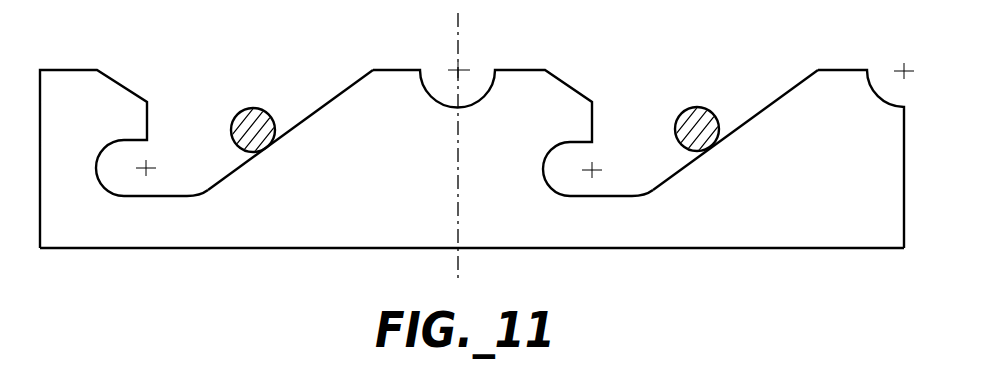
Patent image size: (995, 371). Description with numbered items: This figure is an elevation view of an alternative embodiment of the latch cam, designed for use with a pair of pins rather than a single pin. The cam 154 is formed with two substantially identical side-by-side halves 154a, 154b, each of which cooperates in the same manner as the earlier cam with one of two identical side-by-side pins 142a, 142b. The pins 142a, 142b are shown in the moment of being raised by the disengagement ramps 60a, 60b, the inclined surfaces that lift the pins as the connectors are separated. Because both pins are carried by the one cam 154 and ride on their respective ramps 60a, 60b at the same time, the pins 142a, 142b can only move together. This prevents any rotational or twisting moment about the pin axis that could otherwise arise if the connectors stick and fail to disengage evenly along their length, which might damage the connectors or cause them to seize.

The cam 154 is at (477, 53).
The first half of cam 154a is at (255, 249).
The second half of cam 154b is at (662, 249).
The first disengagement ramp 60a is at (302, 123).
The second disengagement ramp 60b is at (737, 132).
The first pin 142a is at (254, 107).
The second pin 142b is at (697, 107).